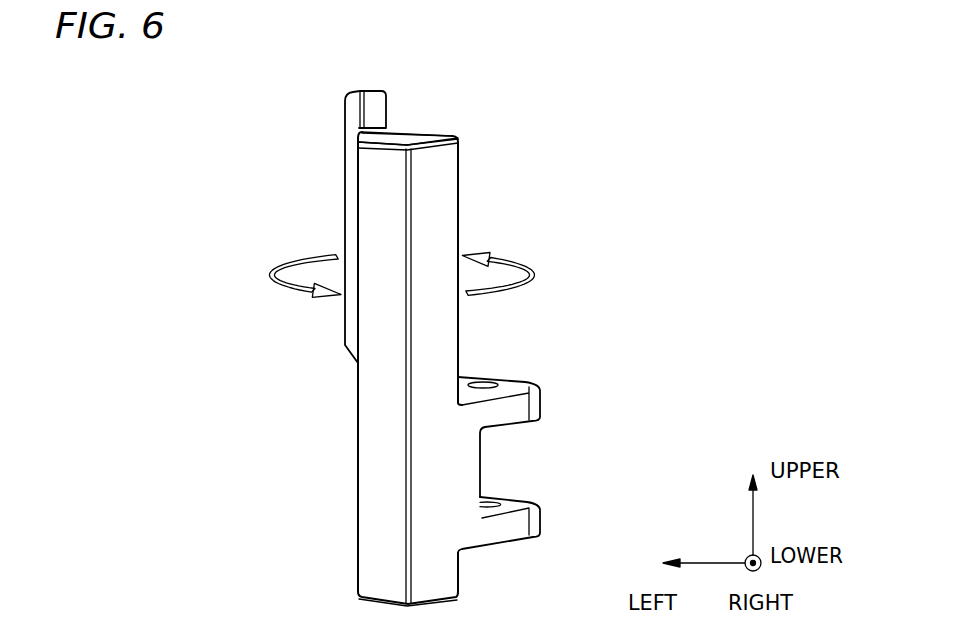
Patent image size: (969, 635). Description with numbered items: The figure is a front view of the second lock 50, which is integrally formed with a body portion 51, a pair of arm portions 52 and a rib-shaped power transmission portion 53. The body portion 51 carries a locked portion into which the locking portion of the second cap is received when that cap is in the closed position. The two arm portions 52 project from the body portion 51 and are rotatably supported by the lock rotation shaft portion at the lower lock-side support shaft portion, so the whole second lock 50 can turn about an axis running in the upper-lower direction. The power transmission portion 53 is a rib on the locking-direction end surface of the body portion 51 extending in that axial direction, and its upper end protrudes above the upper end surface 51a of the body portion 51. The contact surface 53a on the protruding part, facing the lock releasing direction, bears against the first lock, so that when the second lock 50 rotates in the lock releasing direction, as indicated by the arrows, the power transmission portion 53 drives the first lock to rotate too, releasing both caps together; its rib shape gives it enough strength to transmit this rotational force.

The second lock 50 is at (441, 336).
The body portion 51 is at (380, 435).
The upper end surface of the body portion 51a is at (408, 137).
The arm portions 52 is at (515, 410).
The power transmission portion 53 is at (370, 215).
The contact surface 53a is at (377, 112).